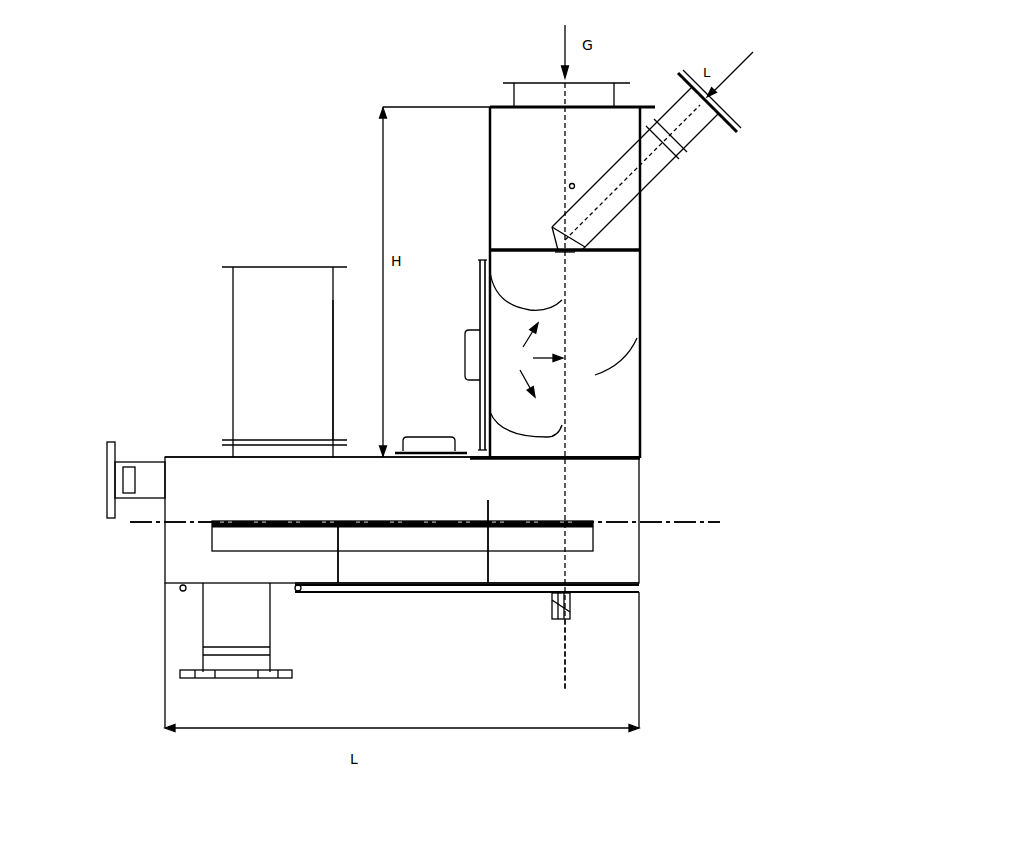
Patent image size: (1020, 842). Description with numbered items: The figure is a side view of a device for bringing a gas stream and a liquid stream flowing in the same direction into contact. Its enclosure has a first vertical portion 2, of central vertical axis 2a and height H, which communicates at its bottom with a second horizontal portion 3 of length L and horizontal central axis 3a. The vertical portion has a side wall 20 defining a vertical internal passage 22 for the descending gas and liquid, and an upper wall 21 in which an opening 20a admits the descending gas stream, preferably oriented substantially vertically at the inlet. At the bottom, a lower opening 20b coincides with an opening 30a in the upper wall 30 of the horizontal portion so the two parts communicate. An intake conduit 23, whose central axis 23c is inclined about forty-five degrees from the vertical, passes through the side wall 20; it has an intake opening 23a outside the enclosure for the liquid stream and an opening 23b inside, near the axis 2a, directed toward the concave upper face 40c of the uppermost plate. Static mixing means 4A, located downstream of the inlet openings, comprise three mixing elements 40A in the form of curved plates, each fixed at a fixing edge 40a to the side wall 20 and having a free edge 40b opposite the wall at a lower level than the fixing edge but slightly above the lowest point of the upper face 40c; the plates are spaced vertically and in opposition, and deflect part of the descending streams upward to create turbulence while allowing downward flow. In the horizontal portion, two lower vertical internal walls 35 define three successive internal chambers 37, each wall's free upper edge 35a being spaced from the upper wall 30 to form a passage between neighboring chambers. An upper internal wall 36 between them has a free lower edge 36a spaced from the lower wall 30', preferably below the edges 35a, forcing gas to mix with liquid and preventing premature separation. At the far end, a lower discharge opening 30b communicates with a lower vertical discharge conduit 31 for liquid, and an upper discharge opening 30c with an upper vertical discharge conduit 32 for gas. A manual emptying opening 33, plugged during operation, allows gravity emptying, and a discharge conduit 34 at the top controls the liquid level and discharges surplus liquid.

The first vertical portion 2 is at (646, 282).
The central vertical axis 2a is at (566, 671).
The side wall 20 is at (641, 393).
The opening 20a is at (543, 105).
The lower opening 20b is at (596, 466).
The upper wall 21 is at (500, 107).
The vertical internal passage 22 is at (598, 338).
The intake conduit 23 is at (668, 163).
The intake opening 23a is at (722, 109).
The opening 23b is at (553, 231).
The central axis 23c is at (668, 130).
The second horizontal portion 3 is at (146, 546).
The horizontal central axis 3a is at (664, 522).
The upper wall 30 is at (399, 490).
The opening 30a is at (609, 463).
The lower discharge opening 30b is at (242, 585).
The upper discharge opening 30c is at (280, 445).
The lower wall 30' is at (467, 628).
The lower vertical discharge conduit 31 is at (273, 639).
The upper vertical discharge conduit 32 is at (333, 332).
The manual emptying opening 33 is at (549, 606).
The discharge conduit 34 is at (133, 452).
The lower vertical internal walls 35 is at (338, 563).
The free upper edge 35a is at (338, 521).
The upper internal wall 36 is at (402, 459).
The free lower edge 36a is at (404, 578).
The internal chambers 37 is at (243, 499).
The fixing edge 40a is at (483, 262).
The free edge 40b is at (565, 300).
The concave upper face 40c is at (501, 277).
The mixing elements 40A is at (480, 314).
The static mixing means 4A is at (533, 360).